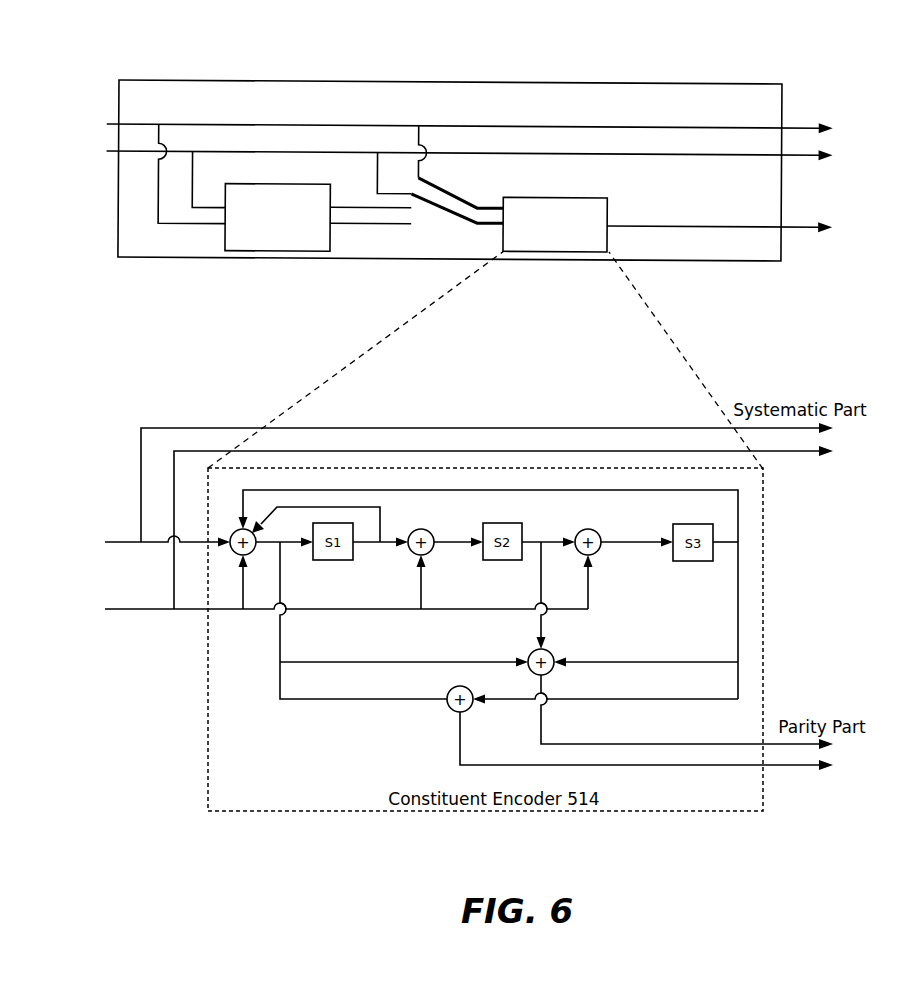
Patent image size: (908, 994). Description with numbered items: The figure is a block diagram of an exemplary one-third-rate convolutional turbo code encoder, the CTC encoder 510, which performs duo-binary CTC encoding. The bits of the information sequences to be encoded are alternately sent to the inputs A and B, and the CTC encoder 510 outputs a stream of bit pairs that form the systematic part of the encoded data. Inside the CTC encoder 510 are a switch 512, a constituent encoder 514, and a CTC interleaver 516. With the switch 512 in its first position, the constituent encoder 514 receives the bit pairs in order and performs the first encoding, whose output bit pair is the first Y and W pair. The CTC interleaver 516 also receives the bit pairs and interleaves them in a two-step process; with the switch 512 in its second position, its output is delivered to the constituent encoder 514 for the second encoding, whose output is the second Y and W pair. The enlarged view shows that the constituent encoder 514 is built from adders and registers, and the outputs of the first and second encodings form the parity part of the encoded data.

The CTC encoder 510 is at (782, 80).
The switch 512 is at (440, 176).
The constituent encoder 514 is at (555, 224).
The CTC interleaver 516 is at (318, 218).